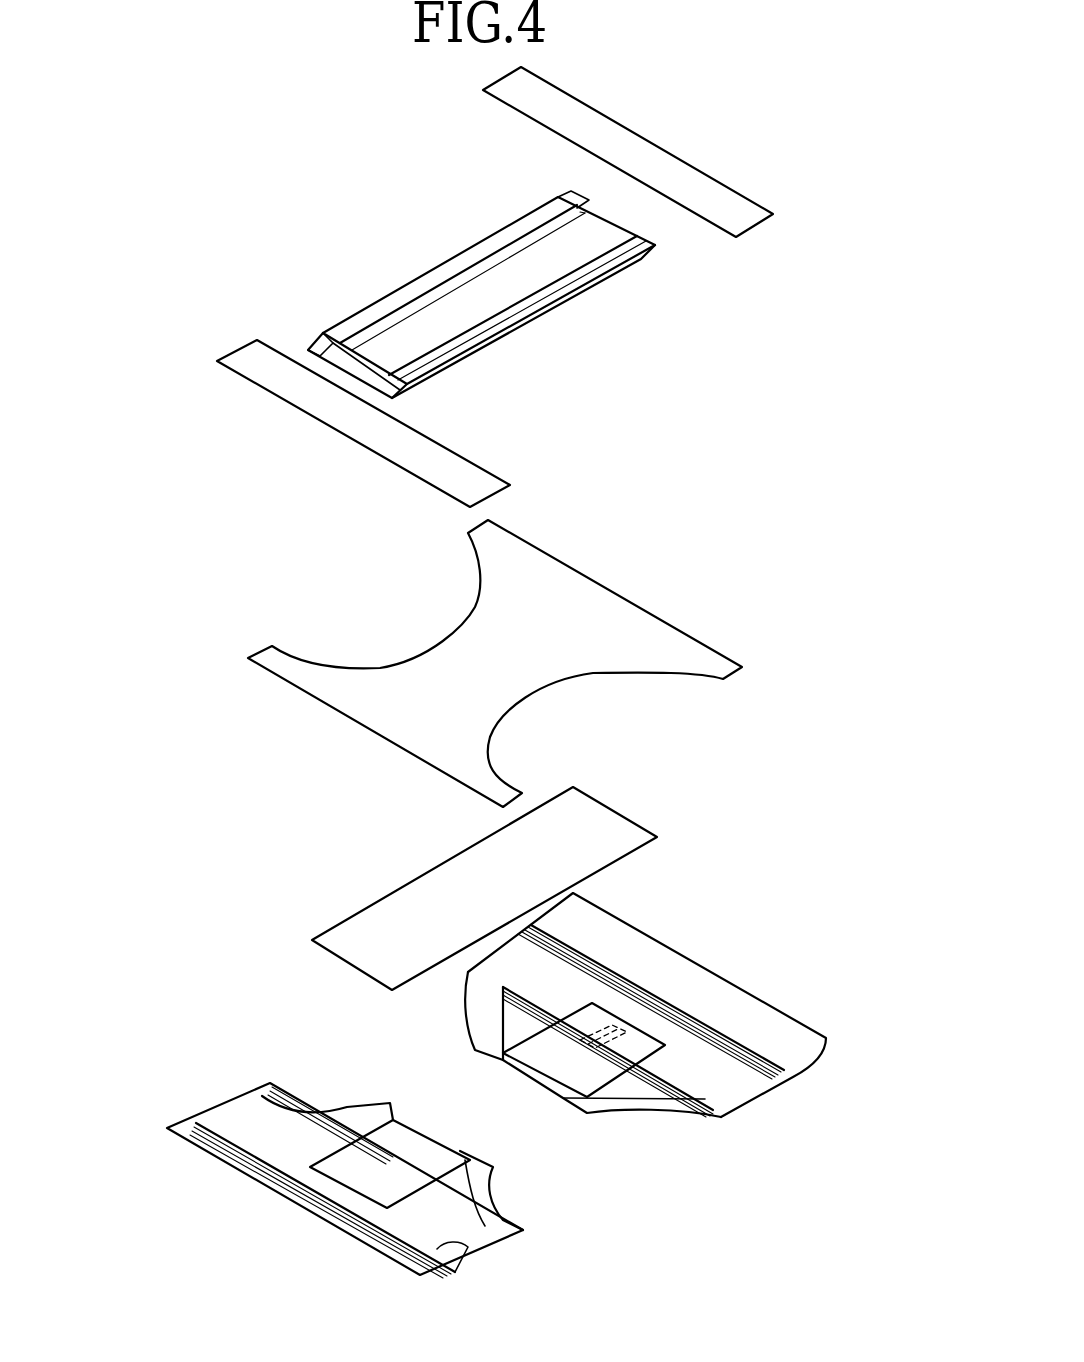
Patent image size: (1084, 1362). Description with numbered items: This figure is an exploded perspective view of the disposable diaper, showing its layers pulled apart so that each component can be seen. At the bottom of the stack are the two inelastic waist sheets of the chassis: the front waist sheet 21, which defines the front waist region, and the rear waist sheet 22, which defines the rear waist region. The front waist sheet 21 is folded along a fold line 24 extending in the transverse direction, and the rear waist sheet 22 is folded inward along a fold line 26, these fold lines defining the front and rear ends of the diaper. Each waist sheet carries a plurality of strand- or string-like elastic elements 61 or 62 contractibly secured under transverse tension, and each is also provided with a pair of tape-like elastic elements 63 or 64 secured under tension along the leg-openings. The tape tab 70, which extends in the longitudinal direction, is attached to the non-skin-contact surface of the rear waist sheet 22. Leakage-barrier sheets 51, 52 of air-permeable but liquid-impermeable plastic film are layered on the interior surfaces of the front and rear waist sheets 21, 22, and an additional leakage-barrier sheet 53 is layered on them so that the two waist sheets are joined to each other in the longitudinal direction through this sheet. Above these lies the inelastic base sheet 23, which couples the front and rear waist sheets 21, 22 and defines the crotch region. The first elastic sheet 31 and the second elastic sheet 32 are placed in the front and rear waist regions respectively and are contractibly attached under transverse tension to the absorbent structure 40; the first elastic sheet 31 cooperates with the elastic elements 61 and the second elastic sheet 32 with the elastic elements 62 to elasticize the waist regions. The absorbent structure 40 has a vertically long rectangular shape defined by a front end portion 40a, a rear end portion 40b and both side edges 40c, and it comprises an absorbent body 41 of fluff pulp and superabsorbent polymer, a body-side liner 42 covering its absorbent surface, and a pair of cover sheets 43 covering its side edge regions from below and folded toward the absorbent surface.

The front waist sheet 21 is at (328, 1160).
The rear waist sheet 22 is at (657, 1028).
The base sheet 23 is at (495, 663).
The fold line 24 is at (345, 1179).
The fold line 26 is at (647, 1005).
The first elastic sheet 31 is at (363, 423).
The second elastic sheet 32 is at (628, 152).
The absorbent structure 40 is at (477, 275).
The front end portion 40a is at (306, 332).
The rear end portion 40b is at (578, 181).
The side edges 40c is at (499, 284).
The absorbent body 41 is at (481, 299).
The body-side liner 42 is at (468, 289).
The cover sheets 43 is at (629, 260).
The leakage-barrier sheet 51 is at (390, 1142).
The leakage-barrier sheet 52 is at (584, 1073).
The additional leakage-barrier sheet 53 is at (486, 880).
The elastic elements 61 is at (370, 1201).
The elastic elements 62 is at (658, 1002).
The tape-like elastic elements 63 is at (412, 1135).
The tape-like elastic elements 64 is at (569, 1071).
The tape tab 70 is at (633, 967).